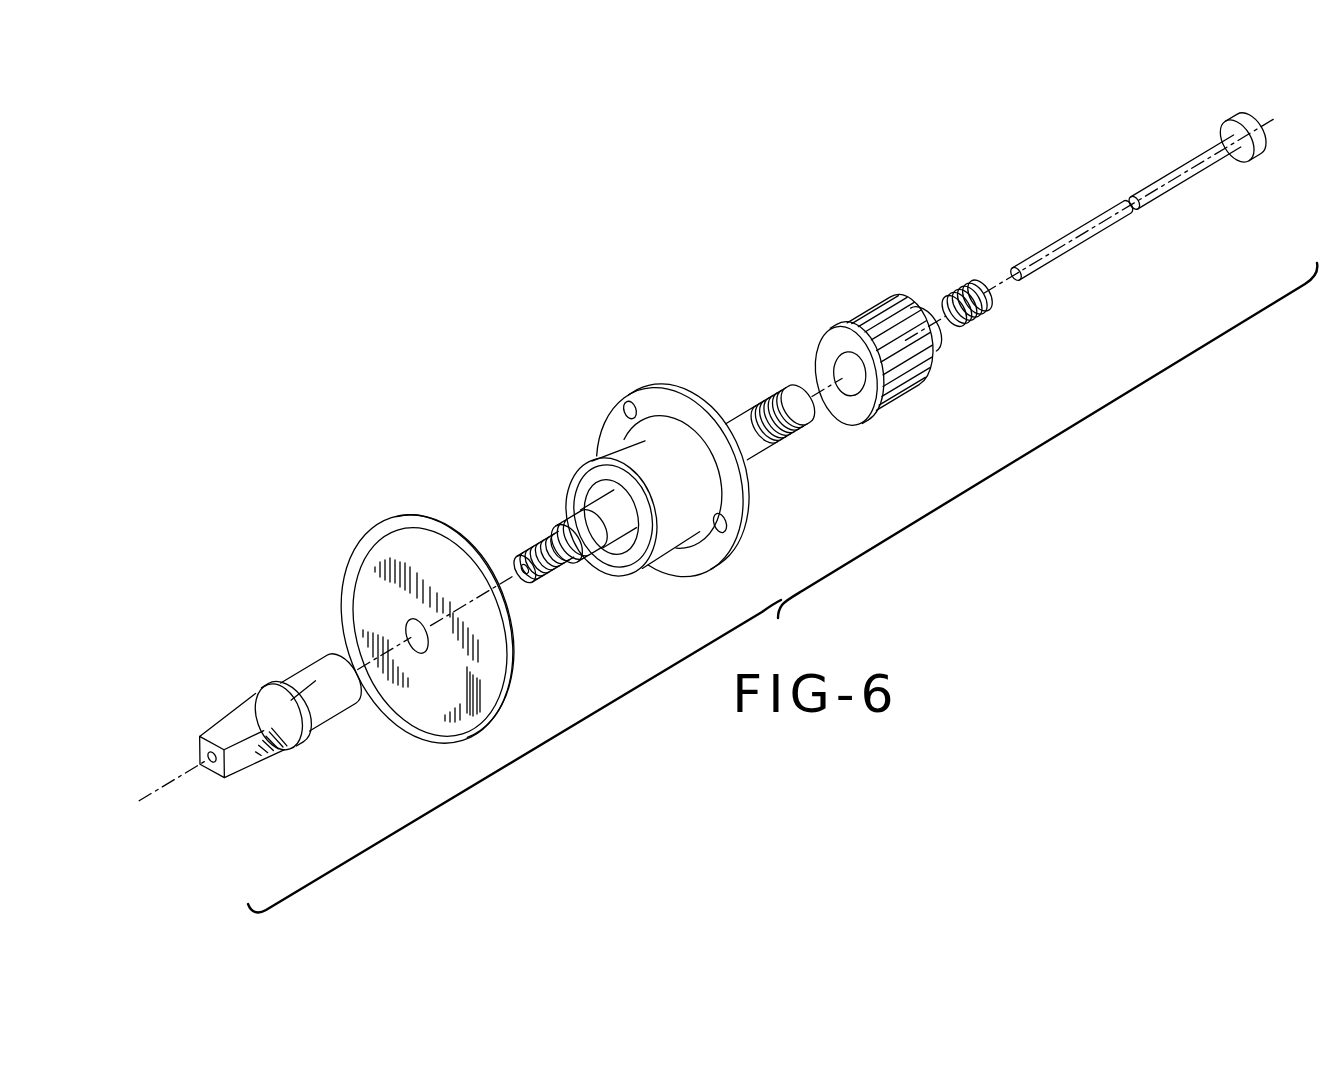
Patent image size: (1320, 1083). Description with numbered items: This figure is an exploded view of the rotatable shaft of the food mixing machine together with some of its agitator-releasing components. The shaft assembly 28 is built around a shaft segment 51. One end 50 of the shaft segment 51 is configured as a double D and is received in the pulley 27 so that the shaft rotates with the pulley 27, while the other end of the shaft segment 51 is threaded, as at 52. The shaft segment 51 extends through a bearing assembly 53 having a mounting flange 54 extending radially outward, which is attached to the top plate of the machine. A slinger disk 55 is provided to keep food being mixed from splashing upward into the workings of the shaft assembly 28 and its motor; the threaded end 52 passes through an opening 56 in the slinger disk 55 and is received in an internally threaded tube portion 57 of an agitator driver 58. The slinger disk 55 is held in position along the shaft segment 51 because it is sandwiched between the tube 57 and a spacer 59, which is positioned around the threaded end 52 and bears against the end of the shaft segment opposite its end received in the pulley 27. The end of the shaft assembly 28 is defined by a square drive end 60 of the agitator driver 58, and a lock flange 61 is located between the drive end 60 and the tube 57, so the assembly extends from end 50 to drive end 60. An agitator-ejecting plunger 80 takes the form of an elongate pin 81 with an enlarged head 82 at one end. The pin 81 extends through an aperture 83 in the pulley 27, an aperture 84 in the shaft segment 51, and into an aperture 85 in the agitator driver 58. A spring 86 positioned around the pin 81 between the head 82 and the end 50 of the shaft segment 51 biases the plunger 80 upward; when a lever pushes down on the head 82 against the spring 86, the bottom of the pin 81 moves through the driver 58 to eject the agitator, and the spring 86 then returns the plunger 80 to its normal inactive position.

The pulley 27 is at (893, 387).
The shaft assembly 28 is at (549, 281).
The end of shaft segment 50 is at (782, 404).
The shaft segment 51 is at (745, 477).
The threaded end 52 is at (553, 565).
The bearing assembly 53 is at (617, 453).
The mounting flange 54 is at (663, 422).
The slinger disk 55 is at (440, 680).
The opening 56 is at (403, 625).
The internally threaded tube portion 57 is at (317, 690).
The agitator driver 58 is at (196, 714).
The spacer 59 is at (600, 527).
The square drive end 60 is at (263, 743).
The lock flange 61 is at (273, 688).
The agitator-ejecting plunger 80 is at (1150, 168).
The elongate pin 81 is at (1073, 237).
The enlarged head 82 is at (1247, 125).
The aperture 83 is at (847, 370).
The aperture 84 is at (513, 562).
The aperture 85 is at (212, 765).
The spring 86 is at (963, 289).